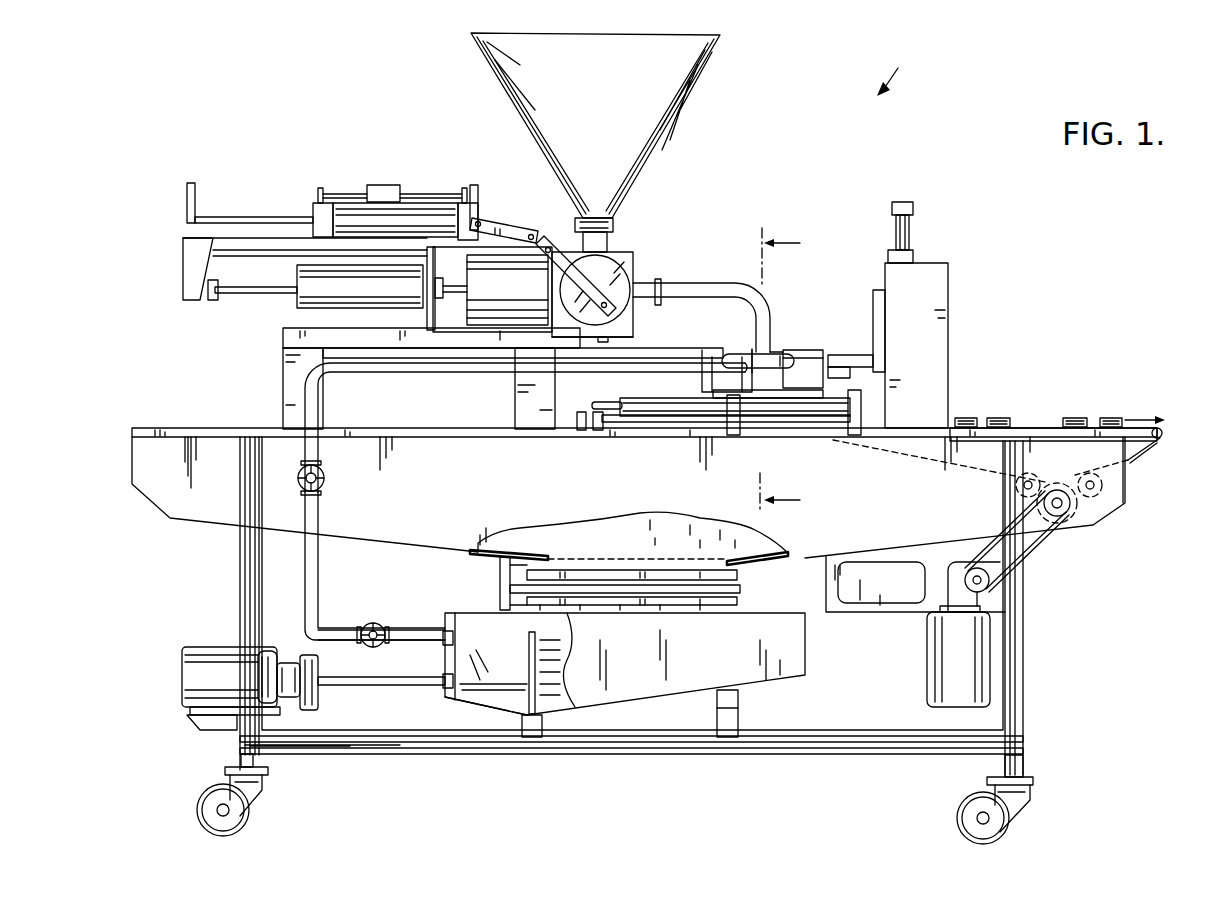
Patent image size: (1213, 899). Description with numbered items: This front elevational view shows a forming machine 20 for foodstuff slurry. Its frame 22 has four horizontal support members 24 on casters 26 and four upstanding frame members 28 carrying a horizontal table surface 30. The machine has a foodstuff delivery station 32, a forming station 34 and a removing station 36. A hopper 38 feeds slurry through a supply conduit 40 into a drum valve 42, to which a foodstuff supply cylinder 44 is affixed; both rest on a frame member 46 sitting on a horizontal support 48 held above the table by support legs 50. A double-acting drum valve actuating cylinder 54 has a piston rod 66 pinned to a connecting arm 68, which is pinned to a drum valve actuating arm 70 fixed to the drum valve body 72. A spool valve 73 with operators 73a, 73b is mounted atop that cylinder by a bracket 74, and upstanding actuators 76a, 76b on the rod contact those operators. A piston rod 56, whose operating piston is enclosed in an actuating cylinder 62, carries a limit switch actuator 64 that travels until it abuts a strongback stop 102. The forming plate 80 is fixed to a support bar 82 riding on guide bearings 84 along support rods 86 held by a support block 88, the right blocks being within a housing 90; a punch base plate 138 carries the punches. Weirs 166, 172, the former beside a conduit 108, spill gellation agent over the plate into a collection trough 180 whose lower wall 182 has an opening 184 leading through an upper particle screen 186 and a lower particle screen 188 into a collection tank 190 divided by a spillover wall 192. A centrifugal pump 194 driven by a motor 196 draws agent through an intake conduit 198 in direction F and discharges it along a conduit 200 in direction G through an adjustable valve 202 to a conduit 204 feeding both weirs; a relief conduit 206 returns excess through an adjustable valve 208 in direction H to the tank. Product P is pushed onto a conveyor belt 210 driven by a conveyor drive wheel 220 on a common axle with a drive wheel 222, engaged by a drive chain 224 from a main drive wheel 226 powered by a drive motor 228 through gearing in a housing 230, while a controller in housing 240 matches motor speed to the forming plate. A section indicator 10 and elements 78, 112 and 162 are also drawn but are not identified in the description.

The forming machine 20 is at (898, 67).
The frame 22 is at (244, 585).
The lower horizontal support members 24 is at (455, 752).
The casters 26 is at (250, 800).
The upstanding frame members 28 is at (244, 553).
The table surface 30 is at (176, 427).
The foodstuff delivery station 32 is at (641, 265).
The forming station 34 is at (791, 339).
The removing station 36 is at (861, 332).
The hopper 38 is at (481, 45).
The supply conduit 40 is at (610, 235).
The foodstuff supply drum valve 42 is at (623, 332).
The foodstuff supply cylinder 44 is at (487, 296).
The frame member 46 is at (426, 322).
The horizontal support 48 is at (283, 340).
The upstanding support legs 50 is at (285, 396).
The drum valve actuating cylinder 54 is at (370, 227).
The piston rod 56 is at (260, 295).
The actuating cylinder 62 is at (300, 302).
The limit switch actuator 64 is at (212, 300).
The piston rod 66 is at (216, 217).
The connecting arm 68 is at (500, 220).
The drum valve actuating arm 70 is at (540, 234).
The drum valve body 72 is at (612, 268).
The spool valve 73 is at (388, 182).
The left spool valve operator 73a is at (345, 190).
The right spool valve operator 73b is at (422, 190).
The bracket 74 is at (322, 190).
The left spool valve actuator 76a is at (185, 194).
The right spool valve actuator 76b is at (478, 190).
The shaft 78 is at (604, 340).
The forming plate 80 is at (656, 403).
The support bar 82 is at (592, 406).
The guide bearing 84 is at (600, 432).
The support rods 86 is at (630, 426).
The support block 88 is at (578, 432).
The housing 90 is at (945, 310).
The strongback stop 102 is at (183, 262).
The conduit 108 is at (698, 285).
The cylinder end 112 is at (785, 417).
The punch base plate 138 is at (832, 362).
The actuator 162 is at (913, 240).
The weir 166 is at (703, 344).
The weir 172 is at (806, 352).
The collection trough 180 is at (415, 527).
The lower wall 182 is at (476, 556).
The opening 184 is at (590, 557).
The upper particle screen 186 is at (625, 575).
The lower particle screen 188 is at (625, 612).
The collection tank 190 is at (688, 698).
The spillover wall 192 is at (529, 640).
The centrifugal pump 194 is at (313, 708).
The motor 196 is at (192, 648).
The intake conduit 198 is at (375, 678).
The conduit 200 is at (452, 370).
The adjustable valve 202 is at (325, 484).
The conduit 204 is at (742, 355).
The relief conduit 206 is at (333, 628).
The adjustable valve 208 is at (373, 622).
The conveyor belt 210 is at (1046, 426).
The conveyor drive wheel 220 is at (1075, 515).
The drive wheel 222 is at (1058, 490).
The drive chain 224 is at (1040, 550).
The main drive wheel 226 is at (992, 585).
The drive motor 228 is at (992, 686).
The housing 230 is at (985, 605).
The housing 240 is at (898, 606).
The section line 10 is at (790, 370).
The product P is at (975, 418).
The directional arrow F is at (430, 690).
The directional arrow G is at (325, 552).
The directional arrow H is at (400, 617).